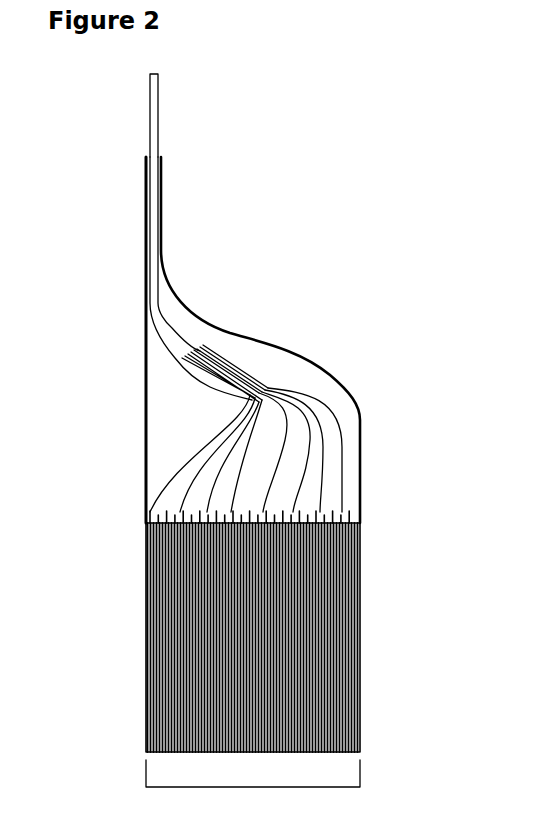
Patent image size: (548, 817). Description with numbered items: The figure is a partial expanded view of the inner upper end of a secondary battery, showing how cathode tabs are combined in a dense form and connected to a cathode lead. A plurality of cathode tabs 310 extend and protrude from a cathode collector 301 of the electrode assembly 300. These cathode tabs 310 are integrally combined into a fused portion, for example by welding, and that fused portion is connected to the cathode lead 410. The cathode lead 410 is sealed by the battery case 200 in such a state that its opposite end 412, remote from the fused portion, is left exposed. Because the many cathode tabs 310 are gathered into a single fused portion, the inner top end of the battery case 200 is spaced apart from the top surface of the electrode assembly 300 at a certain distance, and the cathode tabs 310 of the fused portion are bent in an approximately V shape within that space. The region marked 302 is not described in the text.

The battery case 200 is at (360, 453).
The opposite end 412 is at (158, 146).
The cathode lead 410 is at (180, 348).
The cathode tabs 310 is at (157, 468).
The fiber insertion holes 302 is at (360, 515).
The cathode collector 301 is at (162, 637).
The electrode assembly 300 is at (253, 775).